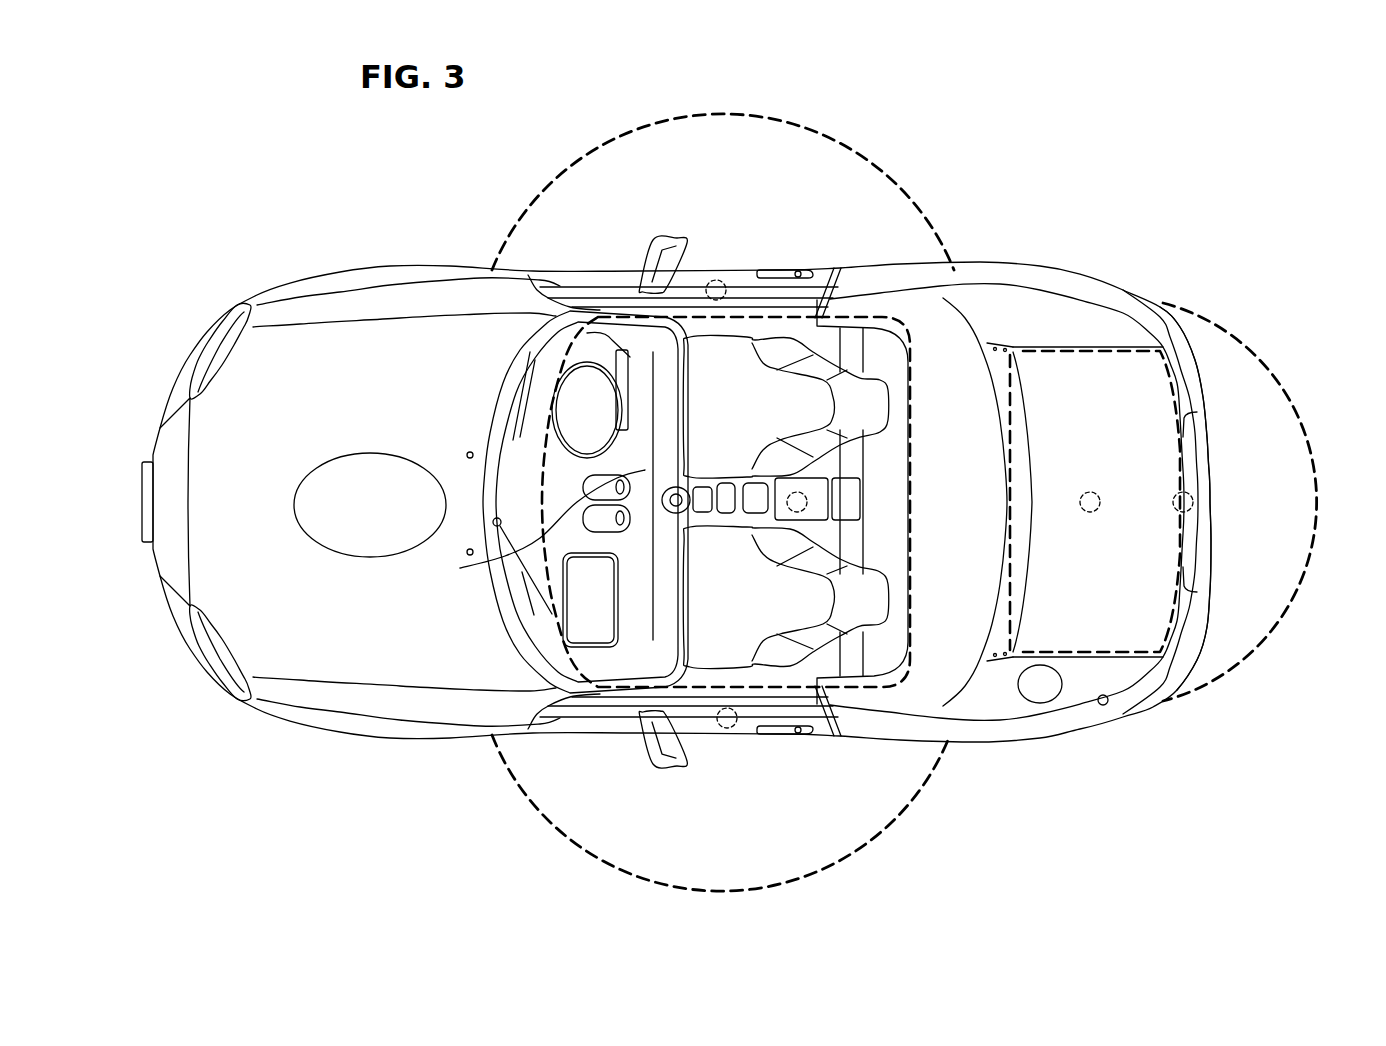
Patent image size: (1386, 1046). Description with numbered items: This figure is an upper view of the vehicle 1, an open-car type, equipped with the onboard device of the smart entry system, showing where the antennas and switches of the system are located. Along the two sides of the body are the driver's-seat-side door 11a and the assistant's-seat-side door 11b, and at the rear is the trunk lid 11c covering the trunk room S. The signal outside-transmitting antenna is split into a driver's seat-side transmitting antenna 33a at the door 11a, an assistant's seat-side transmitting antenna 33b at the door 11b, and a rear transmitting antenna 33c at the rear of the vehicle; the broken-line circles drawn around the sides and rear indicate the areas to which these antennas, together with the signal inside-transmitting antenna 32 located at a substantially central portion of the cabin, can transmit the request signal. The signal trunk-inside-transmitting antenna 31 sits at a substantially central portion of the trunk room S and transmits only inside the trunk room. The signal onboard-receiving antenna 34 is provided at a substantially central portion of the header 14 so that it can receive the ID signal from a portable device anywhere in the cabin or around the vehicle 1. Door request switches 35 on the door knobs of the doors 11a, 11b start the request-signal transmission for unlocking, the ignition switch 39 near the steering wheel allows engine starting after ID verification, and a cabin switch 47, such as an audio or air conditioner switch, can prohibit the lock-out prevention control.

The vehicle 1 is at (251, 163).
The driver's-seat-side door 11a is at (588, 284).
The assistant's-seat-side door 11b is at (596, 729).
The trunk lid 11c is at (1163, 442).
The header 14 is at (672, 559).
The signal trunk-inside-transmitting antenna 31 is at (1090, 513).
The signal inside-transmitting antenna 32 is at (807, 499).
The driver's seat-side transmitting antenna 33a is at (712, 280).
The assistant's seat-side transmitting antenna 33b is at (728, 729).
The rear transmitting antenna 33c is at (1195, 506).
The signal onboard-receiving antenna 34 is at (667, 490).
The door request switch 35 is at (800, 270).
The ignition switch 39 is at (627, 393).
The switch 47 is at (536, 528).
The trunk room S is at (1112, 632).